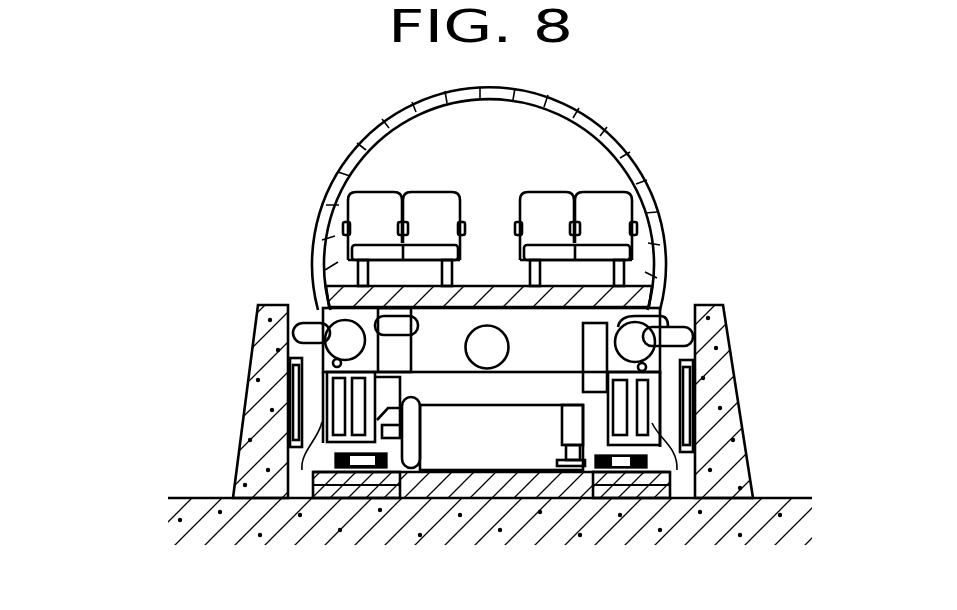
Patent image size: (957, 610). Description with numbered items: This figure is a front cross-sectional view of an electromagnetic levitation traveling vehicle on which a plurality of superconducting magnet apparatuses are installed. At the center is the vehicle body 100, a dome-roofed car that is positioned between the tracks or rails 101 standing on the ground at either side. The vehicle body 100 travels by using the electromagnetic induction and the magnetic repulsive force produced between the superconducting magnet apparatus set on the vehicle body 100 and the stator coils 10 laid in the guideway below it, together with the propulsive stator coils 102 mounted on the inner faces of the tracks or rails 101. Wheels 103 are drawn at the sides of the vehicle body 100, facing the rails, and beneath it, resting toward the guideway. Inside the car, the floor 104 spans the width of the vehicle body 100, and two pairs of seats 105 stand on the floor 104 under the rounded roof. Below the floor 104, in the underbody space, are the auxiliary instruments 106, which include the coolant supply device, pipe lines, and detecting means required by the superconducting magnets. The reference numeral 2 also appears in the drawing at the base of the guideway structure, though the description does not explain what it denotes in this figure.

The vehicle body 100 is at (576, 107).
The tracks or rails 101 is at (262, 330).
The propulsive stator coils 102 is at (290, 445).
The wheels 103 is at (300, 321).
The floor 104 is at (471, 289).
The seats 105 is at (428, 190).
The auxiliary instruments 106 is at (509, 347).
The track bed 2 is at (302, 468).
The stator coils 10 is at (393, 470).